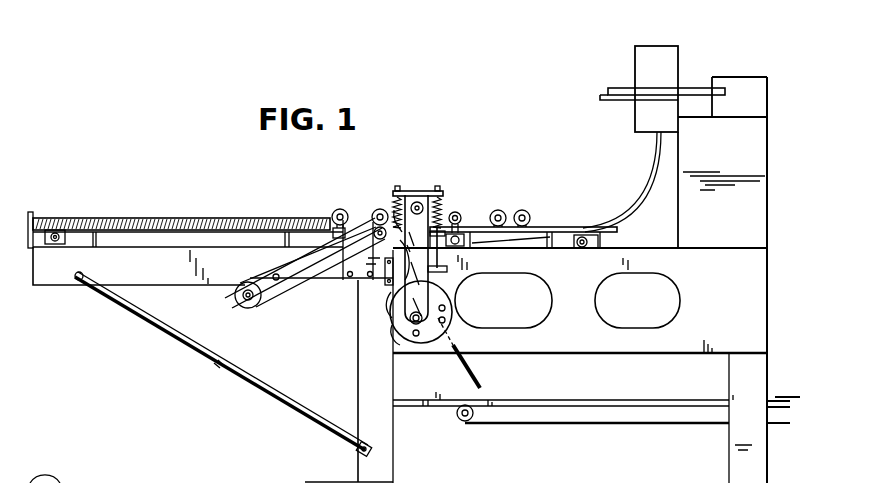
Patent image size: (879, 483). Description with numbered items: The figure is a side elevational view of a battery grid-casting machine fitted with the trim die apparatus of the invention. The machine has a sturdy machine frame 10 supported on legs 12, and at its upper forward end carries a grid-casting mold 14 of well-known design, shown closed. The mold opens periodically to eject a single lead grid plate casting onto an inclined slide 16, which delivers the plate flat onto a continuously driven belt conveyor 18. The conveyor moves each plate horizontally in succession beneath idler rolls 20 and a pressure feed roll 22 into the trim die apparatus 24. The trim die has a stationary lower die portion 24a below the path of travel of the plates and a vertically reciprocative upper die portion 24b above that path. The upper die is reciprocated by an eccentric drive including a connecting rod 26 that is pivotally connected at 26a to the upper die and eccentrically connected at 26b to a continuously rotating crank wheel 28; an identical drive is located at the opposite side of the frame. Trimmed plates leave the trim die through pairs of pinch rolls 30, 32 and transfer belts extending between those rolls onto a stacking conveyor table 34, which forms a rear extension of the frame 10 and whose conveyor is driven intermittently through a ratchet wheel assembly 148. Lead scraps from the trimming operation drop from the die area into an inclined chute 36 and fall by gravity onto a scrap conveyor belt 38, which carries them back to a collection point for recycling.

The machine frame 10 is at (760, 280).
The legs 12 is at (757, 447).
The grid-casting mold 14 is at (678, 46).
The inclined slide 16 is at (640, 183).
The belt conveyor 18 is at (568, 228).
The idler rolls 20 is at (512, 208).
The pressure feed roll 22 is at (460, 214).
The trim die apparatus 24 is at (426, 189).
The lower die portion 24a is at (385, 278).
The upper die portion 24b is at (397, 206).
The connecting rod 26 is at (392, 302).
The pivotal connection 26a is at (398, 202).
The eccentric connection 26b is at (395, 340).
The crank wheel 28 is at (448, 324).
The pinch rolls 30 is at (378, 208).
The pinch rolls 32 is at (334, 211).
The stacking conveyor table 34 is at (144, 219).
The inclined chute 36 is at (480, 375).
The scrap conveyor belt 38 is at (615, 424).
The ratchet wheel assembly 148 is at (30, 478).